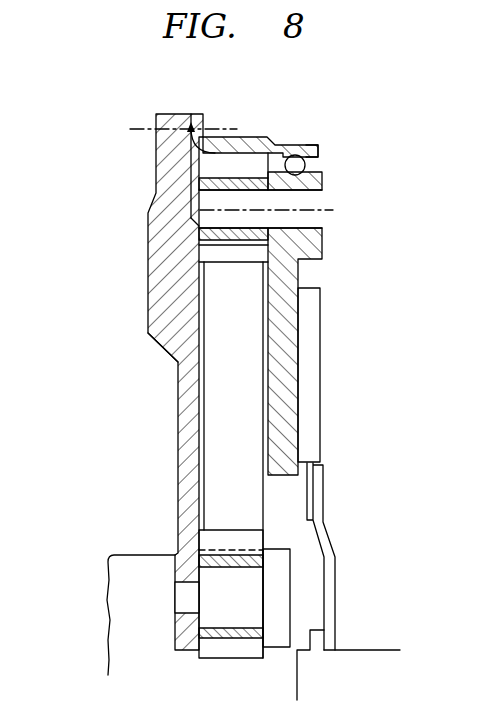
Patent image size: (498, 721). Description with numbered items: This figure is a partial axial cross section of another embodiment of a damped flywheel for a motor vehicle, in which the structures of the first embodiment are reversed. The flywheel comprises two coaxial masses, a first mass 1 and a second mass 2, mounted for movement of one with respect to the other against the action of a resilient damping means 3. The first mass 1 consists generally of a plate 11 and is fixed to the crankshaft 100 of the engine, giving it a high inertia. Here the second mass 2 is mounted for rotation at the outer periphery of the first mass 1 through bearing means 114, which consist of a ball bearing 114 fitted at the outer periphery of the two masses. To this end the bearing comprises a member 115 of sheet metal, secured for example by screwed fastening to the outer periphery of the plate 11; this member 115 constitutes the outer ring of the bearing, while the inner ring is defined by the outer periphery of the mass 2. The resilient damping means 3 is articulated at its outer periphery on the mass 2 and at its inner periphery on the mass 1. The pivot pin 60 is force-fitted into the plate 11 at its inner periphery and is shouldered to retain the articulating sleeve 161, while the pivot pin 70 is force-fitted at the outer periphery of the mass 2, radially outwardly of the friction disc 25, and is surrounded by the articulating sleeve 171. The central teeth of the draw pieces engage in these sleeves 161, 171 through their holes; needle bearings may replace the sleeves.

The first mass 1 is at (144, 280).
The second mass 2 is at (338, 243).
The resilient damping means 3 is at (228, 409).
The plate 11 is at (162, 344).
The friction disc 25 is at (330, 494).
The pivot pin 60 is at (218, 607).
The pivot pin 70 is at (312, 202).
The crankshaft 100 is at (136, 589).
The bearing means 114 is at (318, 150).
The member of sheet metal 115 is at (283, 140).
The articulating sleeve 161 is at (214, 638).
The articulating sleeve 171 is at (204, 187).